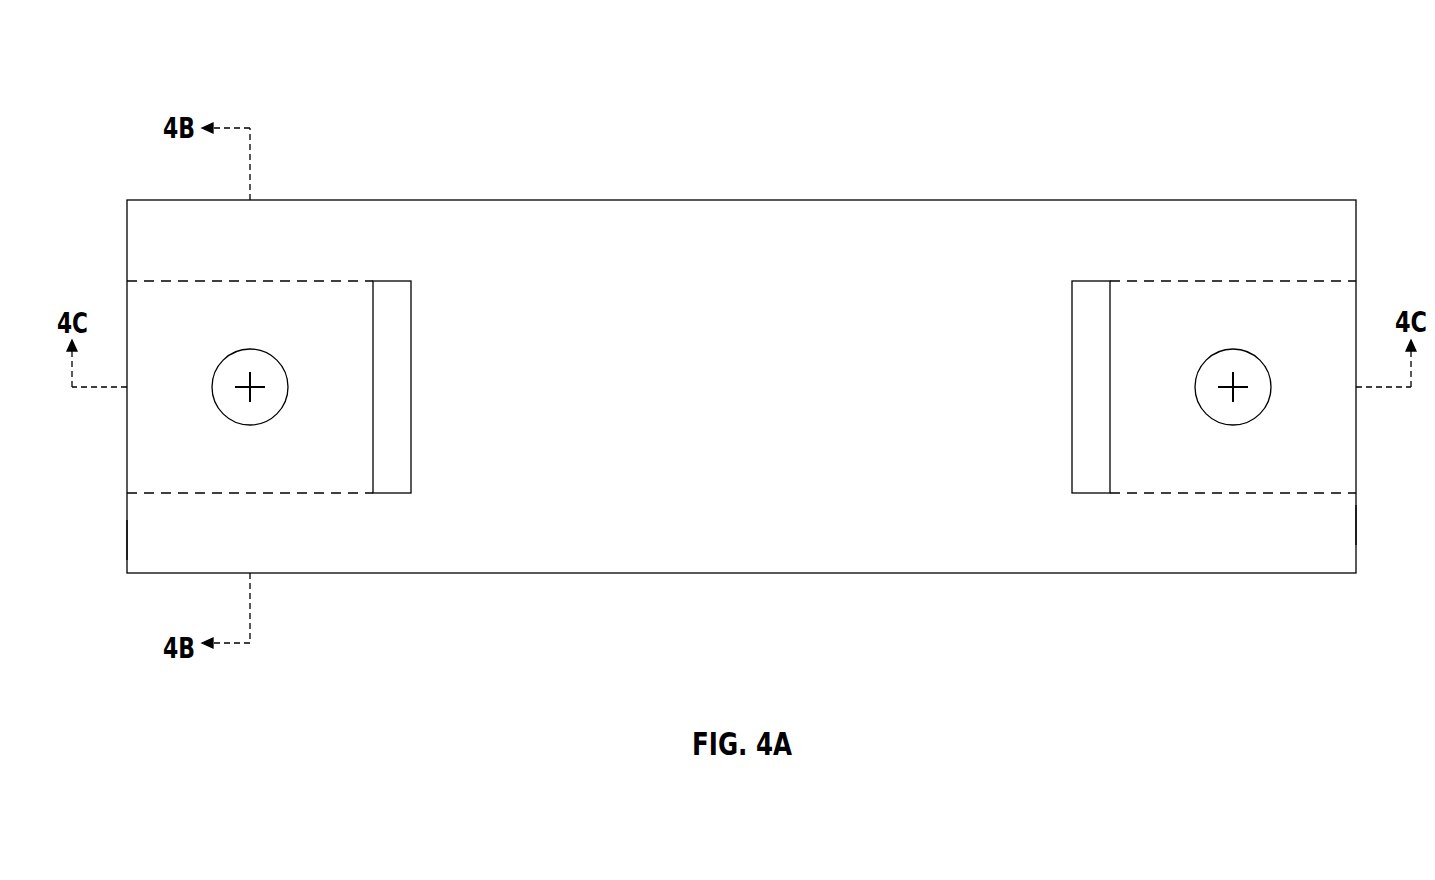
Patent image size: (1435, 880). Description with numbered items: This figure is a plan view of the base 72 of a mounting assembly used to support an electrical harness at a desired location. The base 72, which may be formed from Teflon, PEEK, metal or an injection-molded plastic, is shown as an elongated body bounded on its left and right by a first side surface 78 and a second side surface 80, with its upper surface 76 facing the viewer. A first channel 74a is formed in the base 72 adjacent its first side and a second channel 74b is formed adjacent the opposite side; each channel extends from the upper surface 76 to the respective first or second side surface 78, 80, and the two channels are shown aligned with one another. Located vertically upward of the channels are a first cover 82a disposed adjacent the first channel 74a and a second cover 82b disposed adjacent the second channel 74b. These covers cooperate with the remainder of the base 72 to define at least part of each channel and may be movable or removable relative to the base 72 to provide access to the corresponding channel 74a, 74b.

The base 72 is at (203, 75).
The upper surface 76 is at (556, 228).
The first side surface 78 is at (1356, 520).
The second side surface 80 is at (127, 538).
The first channel 74a is at (1092, 293).
The second channel 74b is at (390, 293).
The first cover 82a is at (1230, 295).
The second cover 82b is at (227, 292).